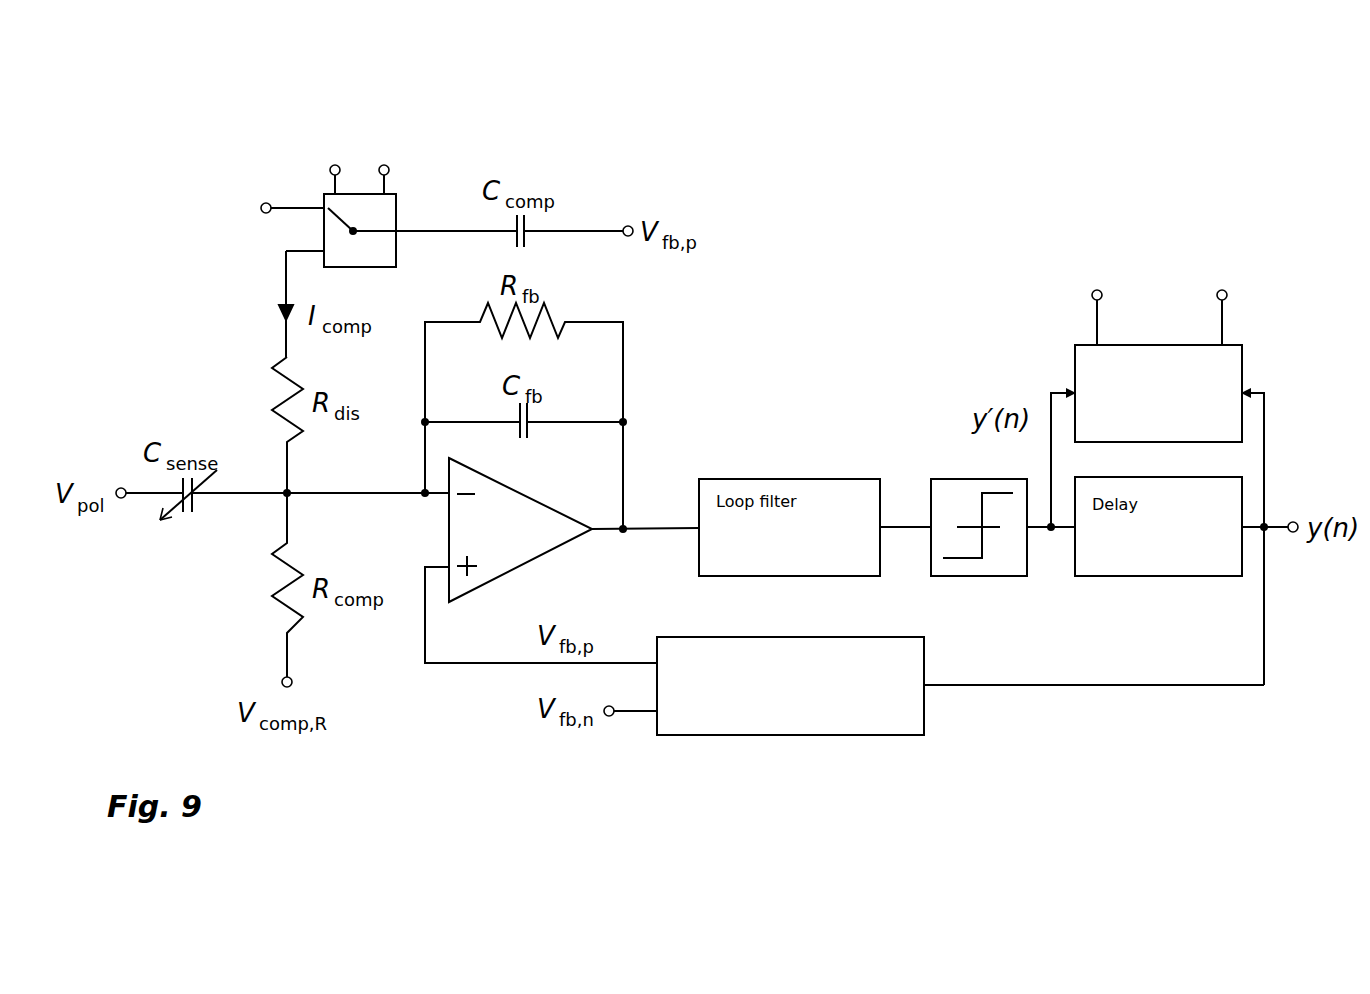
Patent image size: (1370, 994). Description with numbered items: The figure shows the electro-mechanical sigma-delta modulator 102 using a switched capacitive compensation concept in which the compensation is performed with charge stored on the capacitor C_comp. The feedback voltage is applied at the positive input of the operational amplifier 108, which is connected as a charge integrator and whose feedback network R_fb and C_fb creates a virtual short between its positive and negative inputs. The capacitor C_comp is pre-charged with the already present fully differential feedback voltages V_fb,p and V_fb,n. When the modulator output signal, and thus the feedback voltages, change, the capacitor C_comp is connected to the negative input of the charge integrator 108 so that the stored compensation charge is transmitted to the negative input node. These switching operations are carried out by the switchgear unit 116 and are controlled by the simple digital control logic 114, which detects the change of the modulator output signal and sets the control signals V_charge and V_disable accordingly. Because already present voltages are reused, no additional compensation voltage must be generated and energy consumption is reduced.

The electro-mechanical sigma-delta modulator 102 is at (1035, 712).
The operational amplifier 108 is at (497, 580).
The digital control logic 114 is at (1242, 367).
The switchgear unit 116 is at (397, 253).